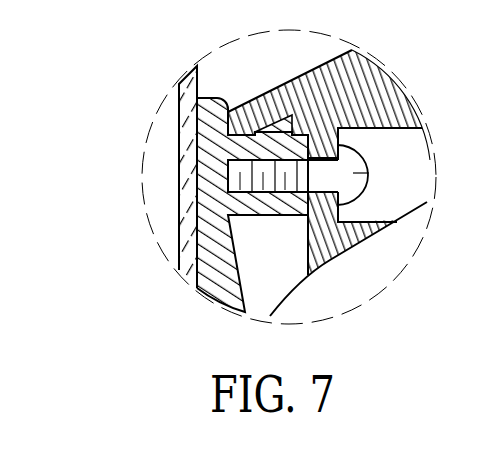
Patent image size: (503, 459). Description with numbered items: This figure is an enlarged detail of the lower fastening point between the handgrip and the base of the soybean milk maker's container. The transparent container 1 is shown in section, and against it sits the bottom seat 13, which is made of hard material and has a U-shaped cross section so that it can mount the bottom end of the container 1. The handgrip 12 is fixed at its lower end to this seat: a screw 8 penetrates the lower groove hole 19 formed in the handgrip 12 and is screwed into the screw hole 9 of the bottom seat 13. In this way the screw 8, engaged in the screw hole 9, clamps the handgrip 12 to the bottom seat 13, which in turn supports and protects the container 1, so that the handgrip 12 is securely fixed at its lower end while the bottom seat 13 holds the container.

The container 1 is at (186, 200).
The screw 8 is at (357, 183).
The screw hole 9 is at (258, 190).
The handgrip 12 is at (357, 88).
The bottom seat 13 is at (223, 278).
The lower groove hole 19 is at (400, 160).